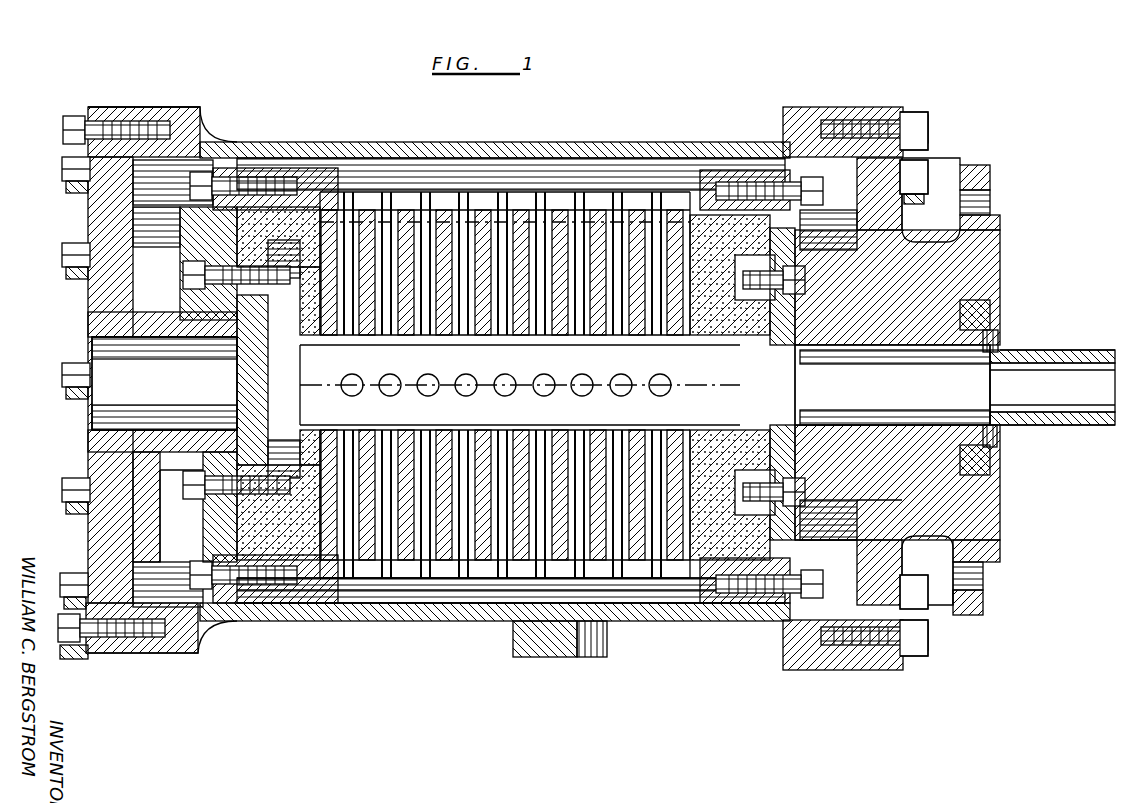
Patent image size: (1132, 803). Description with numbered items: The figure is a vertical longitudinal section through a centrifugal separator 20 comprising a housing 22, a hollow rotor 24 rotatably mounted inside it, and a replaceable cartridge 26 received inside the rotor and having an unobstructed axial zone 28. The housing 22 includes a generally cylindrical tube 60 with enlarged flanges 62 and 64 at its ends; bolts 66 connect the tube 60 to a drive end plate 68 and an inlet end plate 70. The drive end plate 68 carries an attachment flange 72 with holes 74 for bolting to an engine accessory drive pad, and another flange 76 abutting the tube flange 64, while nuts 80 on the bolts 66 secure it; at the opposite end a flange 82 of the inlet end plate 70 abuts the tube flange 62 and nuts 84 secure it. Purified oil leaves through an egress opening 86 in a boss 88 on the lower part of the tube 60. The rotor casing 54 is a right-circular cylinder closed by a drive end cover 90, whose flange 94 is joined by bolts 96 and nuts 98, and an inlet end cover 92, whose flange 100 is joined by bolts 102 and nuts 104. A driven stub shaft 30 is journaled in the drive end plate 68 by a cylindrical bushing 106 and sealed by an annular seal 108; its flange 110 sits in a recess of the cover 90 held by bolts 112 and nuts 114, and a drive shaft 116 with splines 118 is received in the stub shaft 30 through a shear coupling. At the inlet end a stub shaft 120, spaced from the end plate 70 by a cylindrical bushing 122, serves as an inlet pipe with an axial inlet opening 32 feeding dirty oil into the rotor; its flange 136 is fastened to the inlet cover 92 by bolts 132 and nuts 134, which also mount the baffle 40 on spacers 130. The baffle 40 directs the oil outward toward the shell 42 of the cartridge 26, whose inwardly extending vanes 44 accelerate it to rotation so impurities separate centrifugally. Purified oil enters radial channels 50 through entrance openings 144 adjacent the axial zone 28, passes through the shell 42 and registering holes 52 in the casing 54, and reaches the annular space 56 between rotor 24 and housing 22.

The centrifugal separator 20 is at (922, 90).
The housing 22 is at (631, 137).
The rotor 24 is at (425, 600).
The cartridge 26 is at (505, 378).
The axial zone 28 is at (440, 412).
The driven shaft 30 is at (992, 336).
The inlet opening 32 is at (142, 391).
The baffle 40 is at (290, 358).
The shell 42 is at (335, 600).
The vanes 44 is at (548, 365).
The radial channels 50 is at (545, 440).
The holes 52 is at (550, 200).
The rotor casing 54 is at (500, 590).
The annular space 56 is at (342, 148).
The tube 60 is at (445, 160).
The tube flange 62 is at (158, 115).
The tube flange 64 is at (848, 112).
The bolts 66 is at (135, 125).
The drive end plate 68 is at (995, 250).
The inlet end plate 70 is at (100, 200).
The attachment flange 72 is at (985, 173).
The holes 74 is at (985, 200).
The flange 76 is at (908, 112).
The nuts 80 is at (915, 170).
The flange 82 is at (100, 118).
The nuts 84 is at (64, 170).
The egress opening 86 is at (108, 640).
The boss 88 is at (535, 657).
The drive end cover 90 is at (790, 538).
The inlet end cover 92 is at (215, 535).
The flange 94 is at (790, 555).
The bolts 96 is at (782, 185).
The nuts 98 is at (868, 210).
The flange 100 is at (214, 175).
The bolts 102 is at (262, 178).
The nuts 104 is at (200, 170).
The cylindrical bushing 106 is at (908, 378).
The annular seal 108 is at (975, 308).
The flange 110 is at (812, 304).
The bolts 112 is at (756, 300).
The nuts 114 is at (810, 290).
The drive shaft 116 is at (1088, 330).
The splines 118 is at (1092, 352).
The stub shaft 120 is at (100, 336).
The cylindrical bushing 122 is at (95, 320).
The spacers 130 is at (280, 360).
The bolts 132 is at (225, 292).
The nuts 134 is at (305, 428).
The flange 136 is at (135, 297).
The entrance openings 144 is at (510, 365).